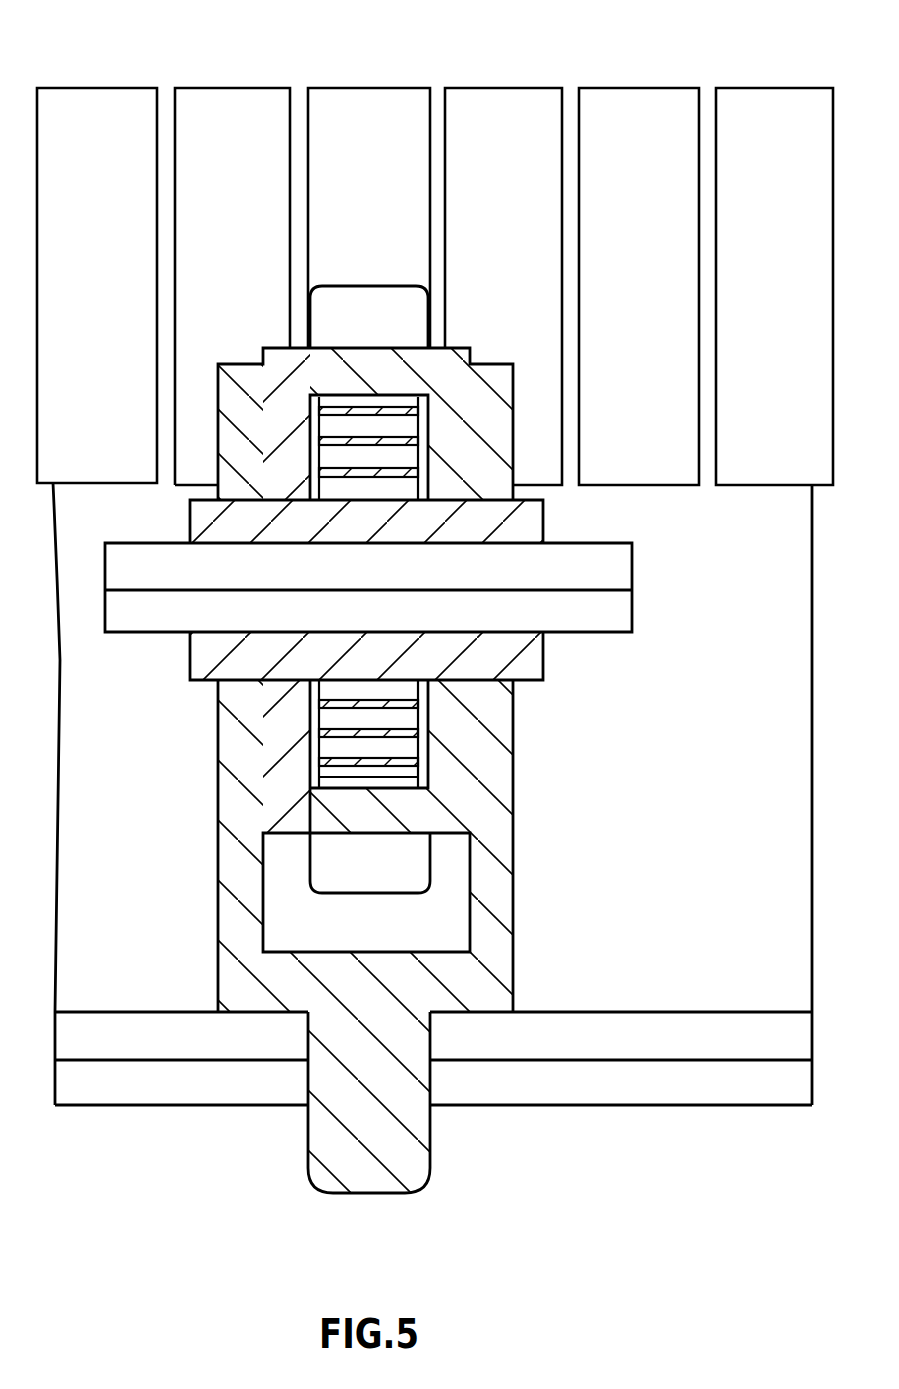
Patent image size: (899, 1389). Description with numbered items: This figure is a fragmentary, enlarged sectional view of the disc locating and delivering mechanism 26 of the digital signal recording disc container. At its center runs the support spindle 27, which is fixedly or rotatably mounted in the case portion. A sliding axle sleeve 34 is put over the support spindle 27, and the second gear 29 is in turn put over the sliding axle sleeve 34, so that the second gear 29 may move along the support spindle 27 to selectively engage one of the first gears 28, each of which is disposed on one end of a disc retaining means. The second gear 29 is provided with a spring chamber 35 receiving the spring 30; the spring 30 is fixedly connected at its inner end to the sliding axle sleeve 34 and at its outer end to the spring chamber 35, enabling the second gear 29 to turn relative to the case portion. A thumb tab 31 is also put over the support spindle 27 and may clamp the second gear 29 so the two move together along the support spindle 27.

The disc locating and delivering mechanism 26 is at (592, 70).
The support spindle 27 is at (618, 568).
The first gears 28 is at (115, 332).
The second gear 29 is at (355, 297).
The spring 30 is at (337, 468).
The thumb tab 31 is at (505, 893).
The sliding axle sleeve 34 is at (205, 673).
The spring chamber 35 is at (333, 788).